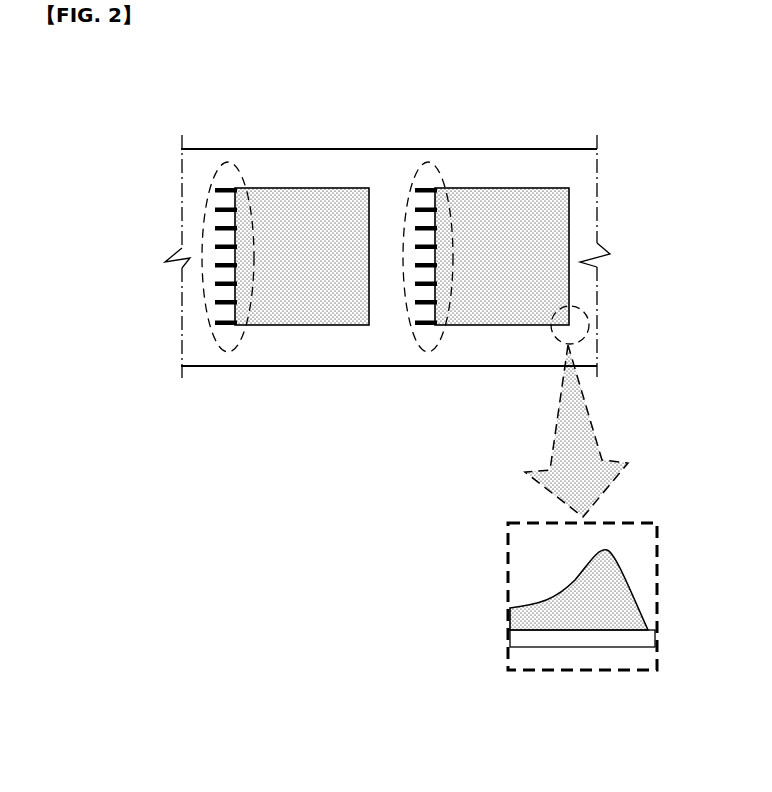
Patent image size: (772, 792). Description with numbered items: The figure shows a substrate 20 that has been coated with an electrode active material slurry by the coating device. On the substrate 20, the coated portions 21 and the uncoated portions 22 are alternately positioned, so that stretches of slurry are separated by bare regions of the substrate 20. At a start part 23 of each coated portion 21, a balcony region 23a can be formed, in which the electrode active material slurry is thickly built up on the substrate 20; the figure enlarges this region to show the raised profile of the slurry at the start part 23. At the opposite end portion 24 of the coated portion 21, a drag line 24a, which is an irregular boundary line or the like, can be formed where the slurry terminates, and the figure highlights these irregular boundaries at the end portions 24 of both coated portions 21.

The substrate 20 is at (475, 370).
The coated portion 21 is at (290, 215).
The uncoated portion 22 is at (381, 222).
The start part 23 is at (570, 213).
The balcony region 23a is at (610, 572).
The end portion 24 is at (215, 222).
The drag line 24a is at (427, 352).